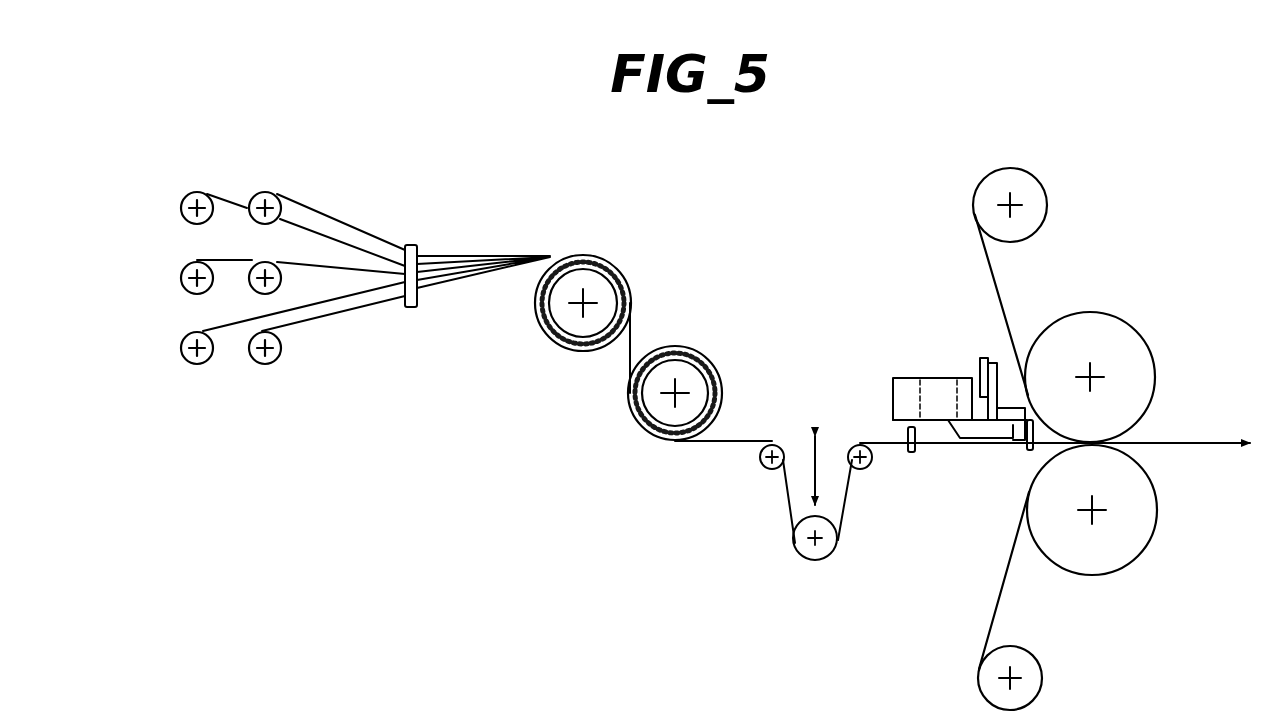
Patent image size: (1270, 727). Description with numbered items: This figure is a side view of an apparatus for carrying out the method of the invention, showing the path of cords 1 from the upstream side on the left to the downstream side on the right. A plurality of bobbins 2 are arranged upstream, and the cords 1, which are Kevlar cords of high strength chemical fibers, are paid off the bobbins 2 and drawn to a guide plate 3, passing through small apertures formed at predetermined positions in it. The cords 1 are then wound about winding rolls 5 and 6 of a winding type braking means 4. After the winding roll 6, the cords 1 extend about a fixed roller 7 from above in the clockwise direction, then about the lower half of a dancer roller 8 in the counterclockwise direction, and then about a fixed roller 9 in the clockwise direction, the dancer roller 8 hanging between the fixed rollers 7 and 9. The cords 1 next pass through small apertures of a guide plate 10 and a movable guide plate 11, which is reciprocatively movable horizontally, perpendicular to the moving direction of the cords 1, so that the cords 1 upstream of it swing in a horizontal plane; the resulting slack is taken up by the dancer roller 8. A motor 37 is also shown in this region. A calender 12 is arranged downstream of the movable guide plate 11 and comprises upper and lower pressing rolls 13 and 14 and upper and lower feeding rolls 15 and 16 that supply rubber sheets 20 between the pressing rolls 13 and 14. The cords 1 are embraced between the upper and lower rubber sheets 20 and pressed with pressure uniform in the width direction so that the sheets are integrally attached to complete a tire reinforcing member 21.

The cords 1 is at (357, 234).
The bobbins 2 is at (186, 214).
The guide plate 3 is at (412, 244).
The winding type braking means 4 is at (636, 336).
The winding roll 5 is at (560, 342).
The winding roll 6 is at (715, 362).
The fixed roller 7 is at (765, 469).
The dancer roller 8 is at (805, 553).
The fixed roller 9 is at (866, 470).
The guide plate 10 is at (912, 455).
The movable guide plate 11 is at (1015, 455).
The calender 12 is at (1062, 439).
The upper pressing roll 13 is at (1145, 358).
The lower pressing roll 14 is at (1130, 548).
The upper feeding roll 15 is at (1047, 200).
The lower feeding roll 16 is at (1043, 675).
The rubber sheets 20 is at (985, 258).
The tire reinforcing member 21 is at (1202, 440).
The motor 37 is at (932, 378).